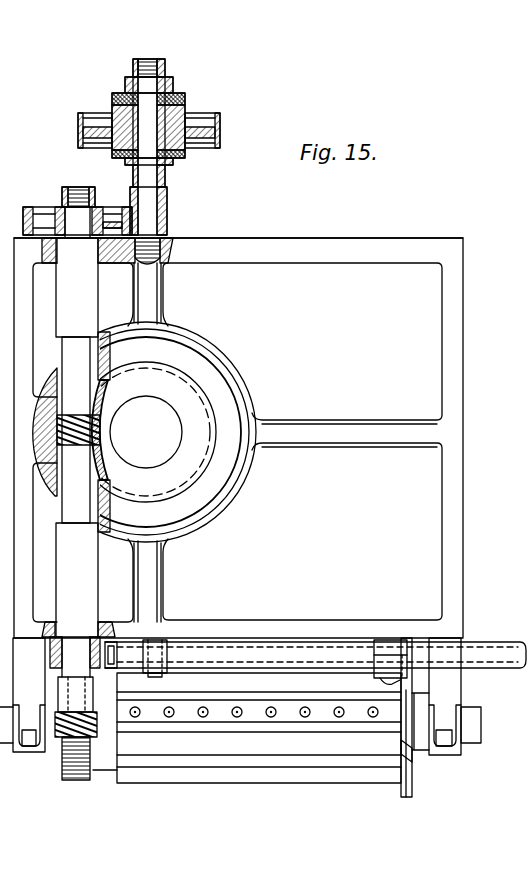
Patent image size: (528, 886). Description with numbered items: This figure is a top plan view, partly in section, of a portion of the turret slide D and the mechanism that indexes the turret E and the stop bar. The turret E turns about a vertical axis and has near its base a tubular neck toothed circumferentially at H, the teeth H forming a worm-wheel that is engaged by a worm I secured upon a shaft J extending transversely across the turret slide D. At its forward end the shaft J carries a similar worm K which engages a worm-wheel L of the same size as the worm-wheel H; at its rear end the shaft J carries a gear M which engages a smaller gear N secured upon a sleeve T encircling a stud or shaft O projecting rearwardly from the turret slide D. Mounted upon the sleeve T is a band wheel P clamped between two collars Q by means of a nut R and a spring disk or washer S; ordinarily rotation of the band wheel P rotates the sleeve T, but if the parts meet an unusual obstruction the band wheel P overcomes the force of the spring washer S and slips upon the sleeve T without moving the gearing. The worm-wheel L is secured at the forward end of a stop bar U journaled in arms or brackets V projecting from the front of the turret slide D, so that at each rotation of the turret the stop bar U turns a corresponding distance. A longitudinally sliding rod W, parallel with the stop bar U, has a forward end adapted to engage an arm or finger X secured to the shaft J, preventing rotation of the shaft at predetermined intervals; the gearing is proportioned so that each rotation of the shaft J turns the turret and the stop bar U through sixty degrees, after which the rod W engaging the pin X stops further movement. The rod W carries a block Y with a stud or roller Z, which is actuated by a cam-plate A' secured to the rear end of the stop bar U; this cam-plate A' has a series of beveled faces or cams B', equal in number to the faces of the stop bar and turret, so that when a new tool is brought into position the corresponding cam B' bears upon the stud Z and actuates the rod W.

The turret slide D is at (238, 422).
The stud or shaft O is at (150, 182).
The nut R is at (168, 74).
The spring disk or washer S is at (178, 90).
The collars Q is at (188, 99).
The band wheel P is at (222, 124).
The sleeve T is at (170, 198).
The smaller gear N is at (168, 218).
The gear M is at (30, 206).
The shaft J is at (77, 422).
The worm I is at (73, 415).
The turret E is at (208, 455).
The teeth H is at (104, 434).
The arm or finger X is at (97, 656).
The worm-wheel L is at (92, 778).
The worm K is at (56, 740).
The arms or brackets V is at (40, 693).
The sliding rod W is at (181, 656).
The block Y is at (389, 654).
The stud or roller Z is at (382, 682).
The stop bar U is at (256, 736).
The cam-plate A' is at (424, 717).
The beveled faces or cams B' is at (376, 747).